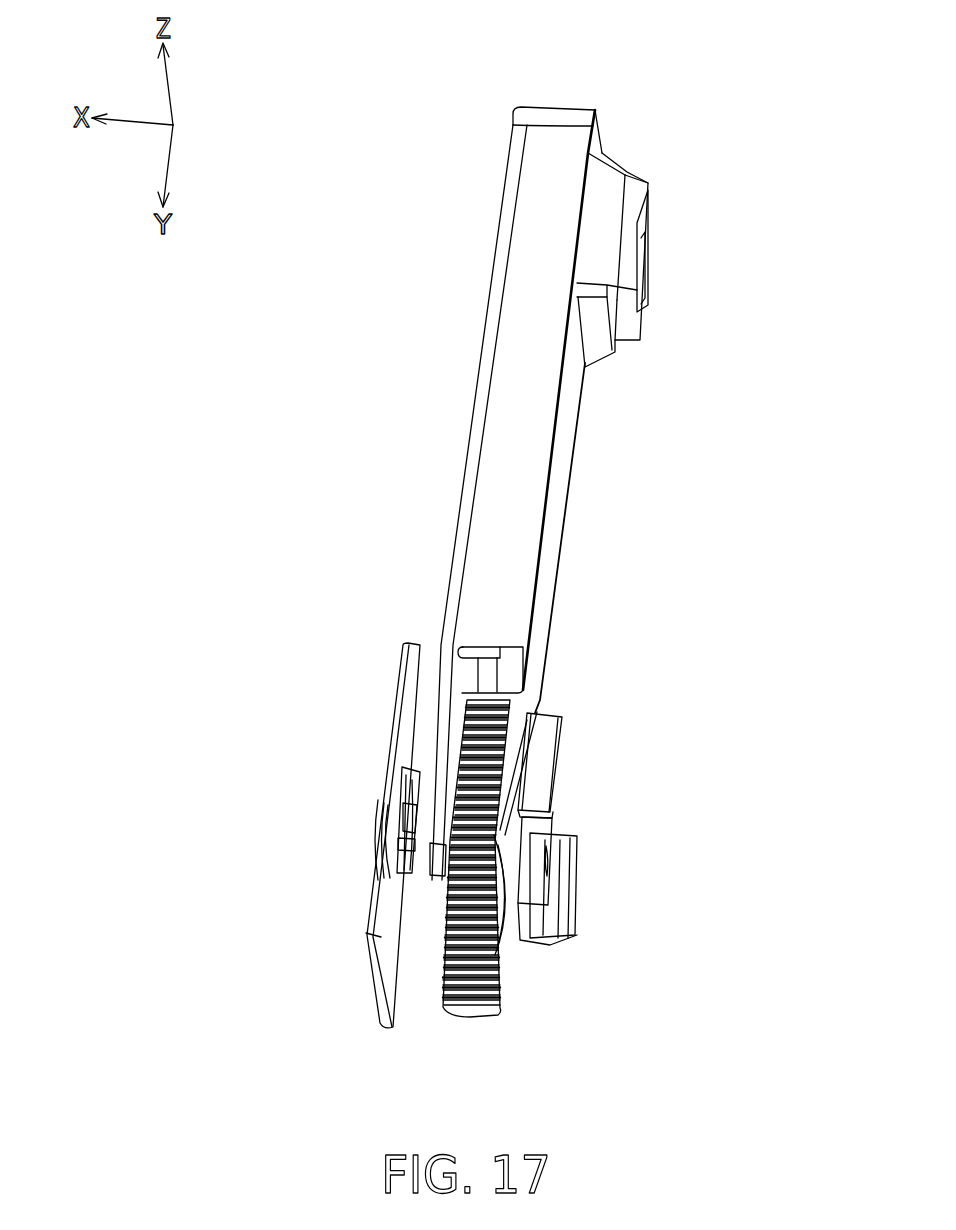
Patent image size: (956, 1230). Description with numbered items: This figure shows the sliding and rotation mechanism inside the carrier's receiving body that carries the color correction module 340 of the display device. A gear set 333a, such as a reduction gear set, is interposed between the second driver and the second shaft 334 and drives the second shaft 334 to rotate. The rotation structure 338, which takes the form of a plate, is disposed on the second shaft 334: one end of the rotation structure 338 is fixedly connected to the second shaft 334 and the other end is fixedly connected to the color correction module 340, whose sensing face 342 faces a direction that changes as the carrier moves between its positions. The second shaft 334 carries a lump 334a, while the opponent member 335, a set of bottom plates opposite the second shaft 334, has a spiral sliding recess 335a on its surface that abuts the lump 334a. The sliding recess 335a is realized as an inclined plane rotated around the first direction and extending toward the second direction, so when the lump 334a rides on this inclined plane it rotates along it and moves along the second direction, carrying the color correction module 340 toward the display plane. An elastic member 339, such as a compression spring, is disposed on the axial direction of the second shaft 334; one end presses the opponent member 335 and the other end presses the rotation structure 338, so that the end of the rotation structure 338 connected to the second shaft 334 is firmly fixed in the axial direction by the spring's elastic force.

The rotation structure 338 is at (480, 360).
The color correction module 340 is at (636, 181).
The sensing face 342 is at (650, 251).
The opponent member 335 is at (407, 700).
The sliding recess 335a is at (410, 784).
The elastic member 339 is at (410, 834).
The lump 334a is at (398, 842).
The second shaft 334 is at (440, 863).
The gear set 333a is at (472, 1018).